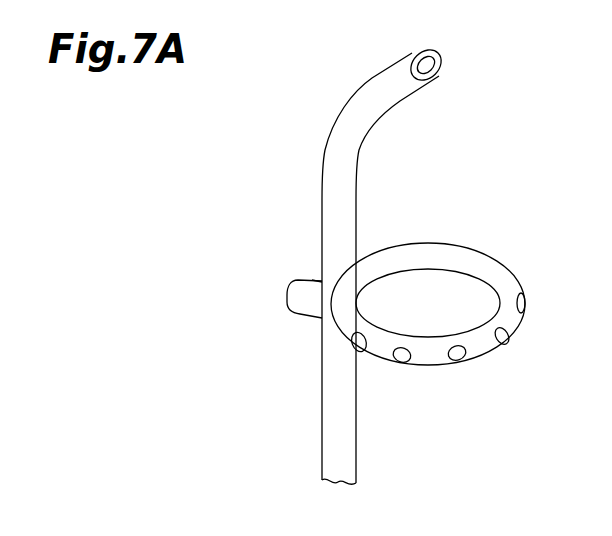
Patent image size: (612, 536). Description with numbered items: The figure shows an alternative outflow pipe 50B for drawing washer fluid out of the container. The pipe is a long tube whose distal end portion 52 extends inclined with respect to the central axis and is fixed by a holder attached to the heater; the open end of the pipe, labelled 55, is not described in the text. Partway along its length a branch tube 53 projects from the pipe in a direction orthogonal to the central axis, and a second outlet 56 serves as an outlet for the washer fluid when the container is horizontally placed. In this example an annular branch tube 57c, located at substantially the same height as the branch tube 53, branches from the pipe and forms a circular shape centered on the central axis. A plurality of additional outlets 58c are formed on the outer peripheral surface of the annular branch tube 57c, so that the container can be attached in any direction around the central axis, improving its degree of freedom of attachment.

The outflow pipe 50B is at (312, 388).
The distal end portion 52 is at (362, 100).
The branch tube 53 is at (316, 287).
The distal end opening 55 is at (438, 57).
The second outlet 56 is at (284, 300).
The annular branch tube 57c is at (481, 346).
The additional outlets 58c is at (401, 360).